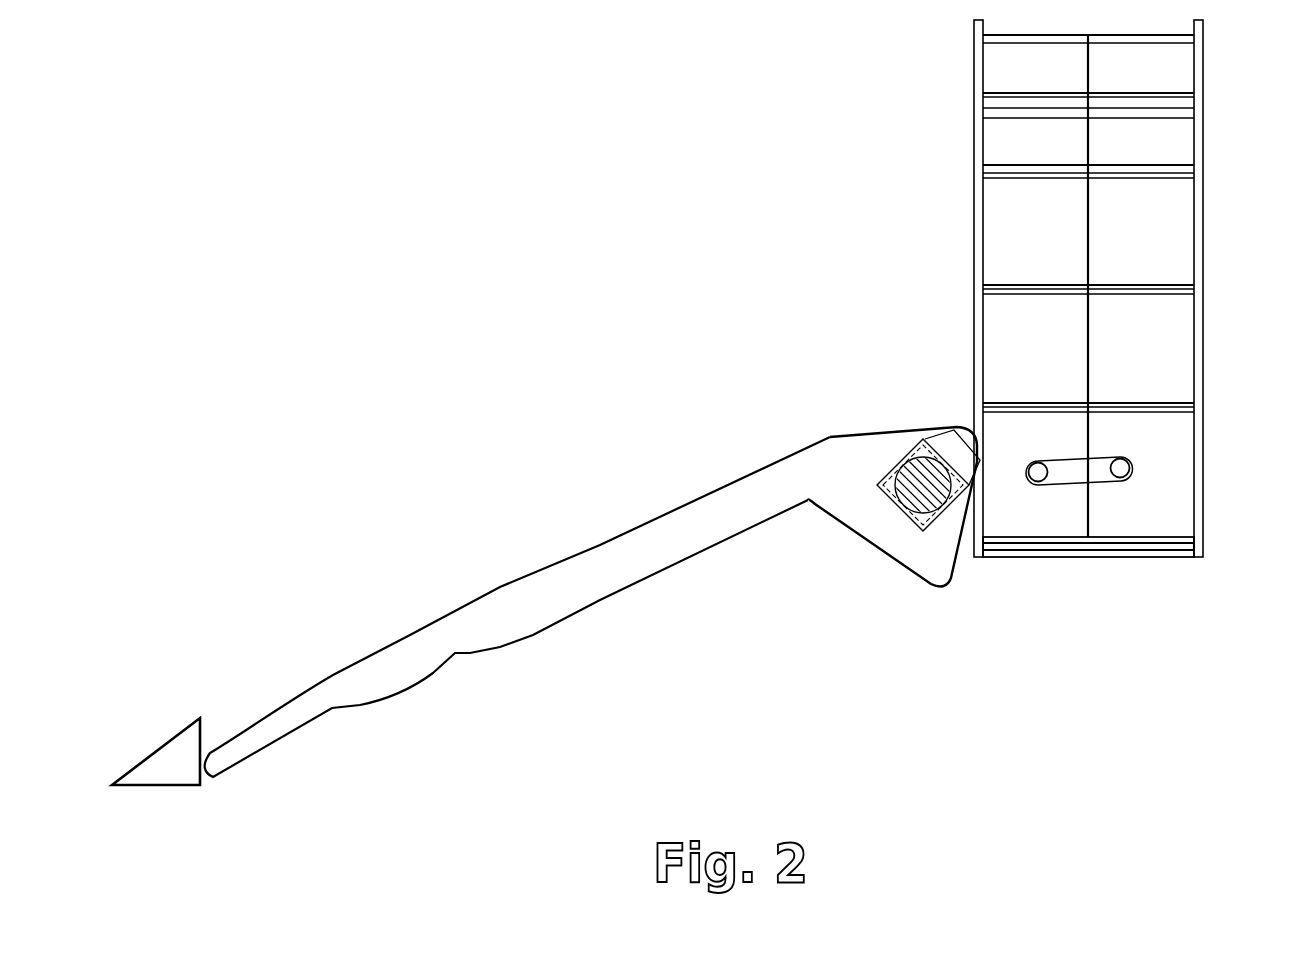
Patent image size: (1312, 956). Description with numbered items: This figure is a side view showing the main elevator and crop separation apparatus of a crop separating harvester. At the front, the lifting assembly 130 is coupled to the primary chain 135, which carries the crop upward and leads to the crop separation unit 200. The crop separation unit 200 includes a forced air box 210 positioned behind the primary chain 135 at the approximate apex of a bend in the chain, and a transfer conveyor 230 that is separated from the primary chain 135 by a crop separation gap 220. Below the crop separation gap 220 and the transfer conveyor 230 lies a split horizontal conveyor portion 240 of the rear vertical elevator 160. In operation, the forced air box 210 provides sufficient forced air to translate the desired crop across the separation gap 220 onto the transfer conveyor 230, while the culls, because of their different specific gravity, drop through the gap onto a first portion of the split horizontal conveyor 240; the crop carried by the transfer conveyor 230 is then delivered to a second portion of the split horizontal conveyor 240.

The lifting assembly 130 is at (172, 737).
The primary chain 135 is at (607, 540).
The rear vertical elevator 160 is at (1205, 143).
The crop separation unit 200 is at (942, 374).
The forced air box 210 is at (915, 523).
The crop separation gap 220 is at (1062, 435).
The transfer conveyor 230 is at (1130, 456).
The split horizontal conveyor portion 240 is at (1163, 558).